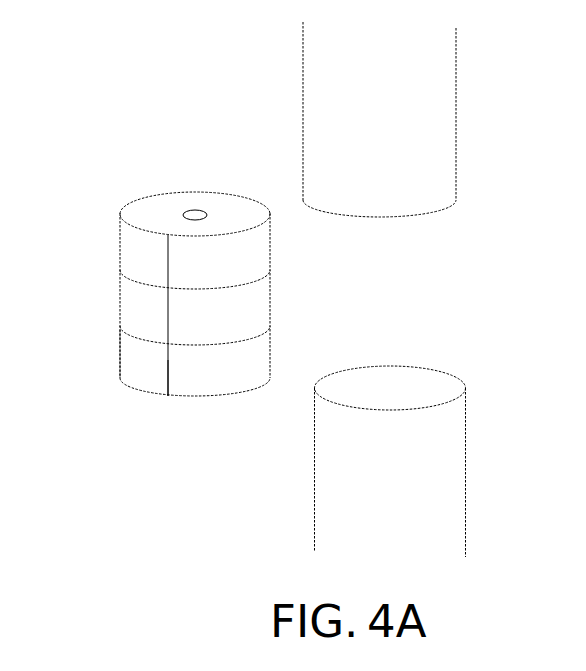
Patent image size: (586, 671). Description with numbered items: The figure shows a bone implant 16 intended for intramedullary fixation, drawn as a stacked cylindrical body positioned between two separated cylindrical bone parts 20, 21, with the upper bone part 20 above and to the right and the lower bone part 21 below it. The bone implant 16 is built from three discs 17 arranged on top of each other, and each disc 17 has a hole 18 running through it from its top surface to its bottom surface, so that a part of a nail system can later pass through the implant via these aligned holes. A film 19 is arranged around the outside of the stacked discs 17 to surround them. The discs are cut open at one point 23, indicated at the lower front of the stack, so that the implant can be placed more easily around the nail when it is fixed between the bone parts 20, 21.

The bone implant 16 is at (108, 297).
The disc 17 is at (252, 263).
The hole 18 is at (190, 211).
The film 19 is at (120, 357).
The bone part 20 is at (435, 135).
The bone part 21 is at (445, 477).
The cut-open point 23 is at (172, 382).